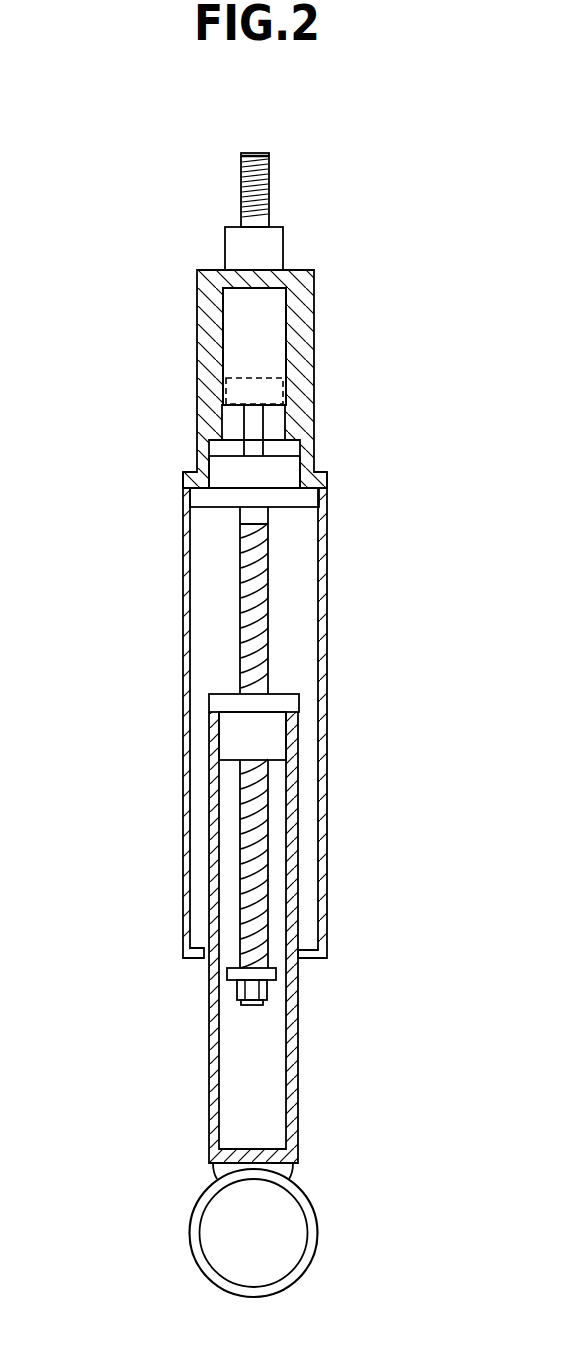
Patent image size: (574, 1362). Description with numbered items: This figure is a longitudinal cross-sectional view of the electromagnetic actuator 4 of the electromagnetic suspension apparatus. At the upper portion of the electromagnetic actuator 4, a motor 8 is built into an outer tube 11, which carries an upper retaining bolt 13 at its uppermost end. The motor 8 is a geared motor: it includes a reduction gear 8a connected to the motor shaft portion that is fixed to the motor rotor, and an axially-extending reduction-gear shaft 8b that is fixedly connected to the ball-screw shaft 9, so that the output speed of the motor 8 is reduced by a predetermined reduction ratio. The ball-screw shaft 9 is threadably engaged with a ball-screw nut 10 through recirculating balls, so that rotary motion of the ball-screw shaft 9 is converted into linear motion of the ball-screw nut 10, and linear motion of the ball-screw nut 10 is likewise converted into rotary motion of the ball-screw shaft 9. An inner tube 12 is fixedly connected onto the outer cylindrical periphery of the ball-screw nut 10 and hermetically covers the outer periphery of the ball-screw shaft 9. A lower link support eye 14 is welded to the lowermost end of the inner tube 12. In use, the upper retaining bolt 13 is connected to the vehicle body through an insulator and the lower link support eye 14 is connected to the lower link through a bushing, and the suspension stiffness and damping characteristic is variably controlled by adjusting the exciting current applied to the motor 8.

The electromagnetic actuator 4 is at (121, 167).
The upper retaining bolt 13 is at (273, 248).
The outer tube 11 is at (207, 339).
The motor 8 is at (275, 333).
The reduction gear 8a is at (300, 394).
The reduction-gear shaft 8b is at (262, 442).
The ball-screw shaft 9 is at (258, 591).
The ball-screw nut 10 is at (262, 730).
The inner tube 12 is at (212, 1050).
The lower link support eye 14 is at (308, 1225).